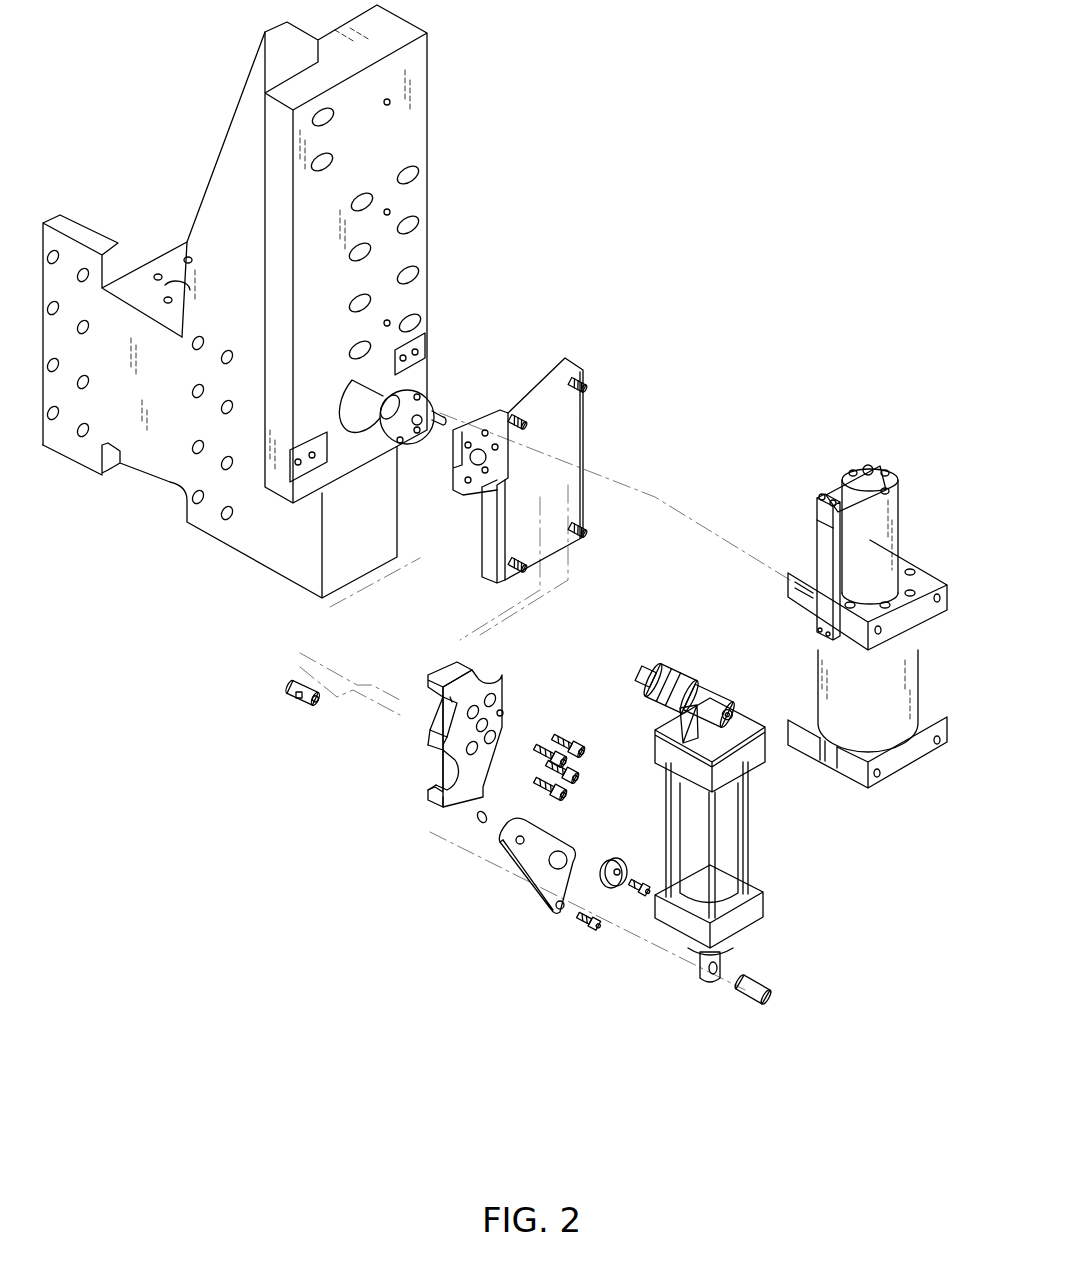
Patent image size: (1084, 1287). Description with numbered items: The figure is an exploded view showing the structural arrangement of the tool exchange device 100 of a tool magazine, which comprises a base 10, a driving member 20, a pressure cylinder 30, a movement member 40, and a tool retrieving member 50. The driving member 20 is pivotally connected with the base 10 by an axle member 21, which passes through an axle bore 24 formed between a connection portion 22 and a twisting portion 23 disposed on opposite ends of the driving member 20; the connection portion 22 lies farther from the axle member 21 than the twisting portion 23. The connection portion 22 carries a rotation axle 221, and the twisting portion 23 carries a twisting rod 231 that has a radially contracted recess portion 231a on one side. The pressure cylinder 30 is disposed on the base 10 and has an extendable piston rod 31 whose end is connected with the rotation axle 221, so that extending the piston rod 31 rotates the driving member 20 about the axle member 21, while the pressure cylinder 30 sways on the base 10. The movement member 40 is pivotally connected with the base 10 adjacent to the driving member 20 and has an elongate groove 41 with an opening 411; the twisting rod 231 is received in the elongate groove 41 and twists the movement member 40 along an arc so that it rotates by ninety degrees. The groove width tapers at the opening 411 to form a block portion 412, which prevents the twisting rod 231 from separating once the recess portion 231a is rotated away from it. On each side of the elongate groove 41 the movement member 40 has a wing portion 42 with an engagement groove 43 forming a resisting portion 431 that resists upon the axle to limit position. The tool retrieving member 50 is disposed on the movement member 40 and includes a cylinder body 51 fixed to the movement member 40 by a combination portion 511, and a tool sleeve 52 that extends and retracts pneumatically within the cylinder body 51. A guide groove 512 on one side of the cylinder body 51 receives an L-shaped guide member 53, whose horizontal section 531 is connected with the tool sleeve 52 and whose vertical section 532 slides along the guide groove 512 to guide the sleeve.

The tool exchange device 100 is at (708, 210).
The base 10 is at (243, 147).
The axle member 21 is at (383, 408).
The combination portion 511 is at (565, 370).
The guide member 53 is at (767, 412).
The horizontal section 531 is at (837, 493).
The vertical section 532 is at (820, 535).
The tool sleeve 52 is at (883, 490).
The cylinder body 51 is at (913, 562).
The wing portion 42 is at (457, 675).
The resisting portion 431 is at (468, 678).
The engagement groove 43 is at (445, 712).
The movement member 40 is at (497, 723).
The twisting rod 231 is at (290, 690).
The recess portion 231a is at (300, 700).
The elongate groove 41 is at (430, 730).
The opening 411 is at (420, 737).
The block portion 412 is at (427, 745).
The axle bore 24 is at (567, 862).
The connection portion 22 is at (503, 838).
The driving member 20 is at (537, 880).
The twisting portion 23 is at (560, 910).
The guide groove 512 is at (828, 758).
The tool retrieving member 50 is at (912, 670).
The pressure cylinder 30 is at (737, 845).
The piston rod 31 is at (700, 970).
The rotation axle 221 is at (747, 992).